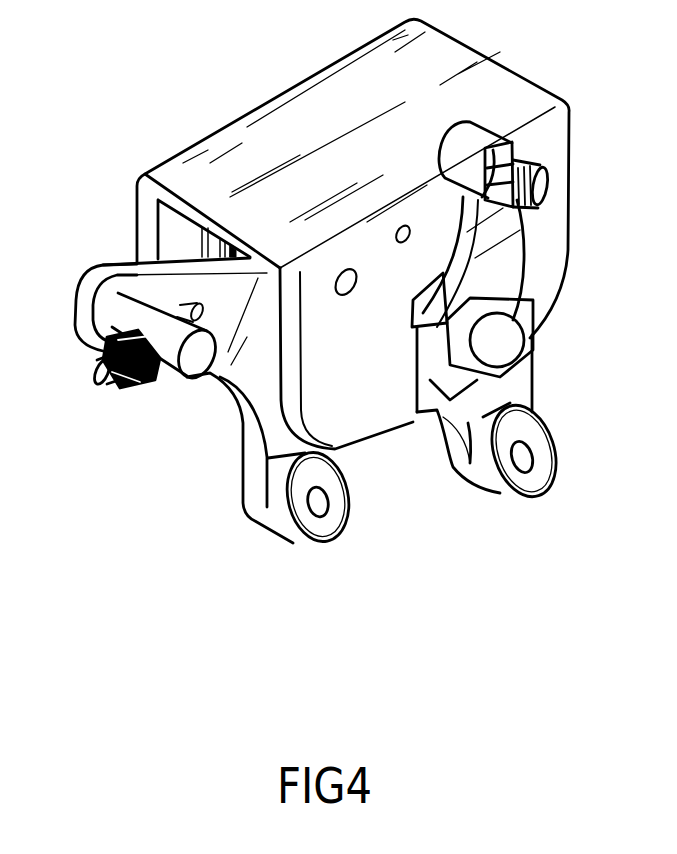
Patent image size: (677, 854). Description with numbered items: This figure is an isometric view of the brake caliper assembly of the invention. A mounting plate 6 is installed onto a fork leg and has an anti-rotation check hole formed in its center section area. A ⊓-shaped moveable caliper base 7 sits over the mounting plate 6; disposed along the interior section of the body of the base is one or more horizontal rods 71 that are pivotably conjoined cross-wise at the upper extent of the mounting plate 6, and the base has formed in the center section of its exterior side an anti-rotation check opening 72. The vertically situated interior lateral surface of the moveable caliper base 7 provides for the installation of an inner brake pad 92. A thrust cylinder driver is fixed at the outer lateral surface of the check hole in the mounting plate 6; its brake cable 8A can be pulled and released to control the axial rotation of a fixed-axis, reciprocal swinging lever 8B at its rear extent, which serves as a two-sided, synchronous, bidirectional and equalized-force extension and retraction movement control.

The ⊓-shaped moveable caliper base 7 is at (237, 168).
The horizontal rod 71 is at (342, 284).
The anti-rotation check opening 72 is at (417, 413).
The inner brake pad 92 is at (213, 246).
The mounting plate 6 is at (262, 372).
The brake cable 8A is at (108, 388).
The reciprocal swinging lever 8B is at (517, 270).